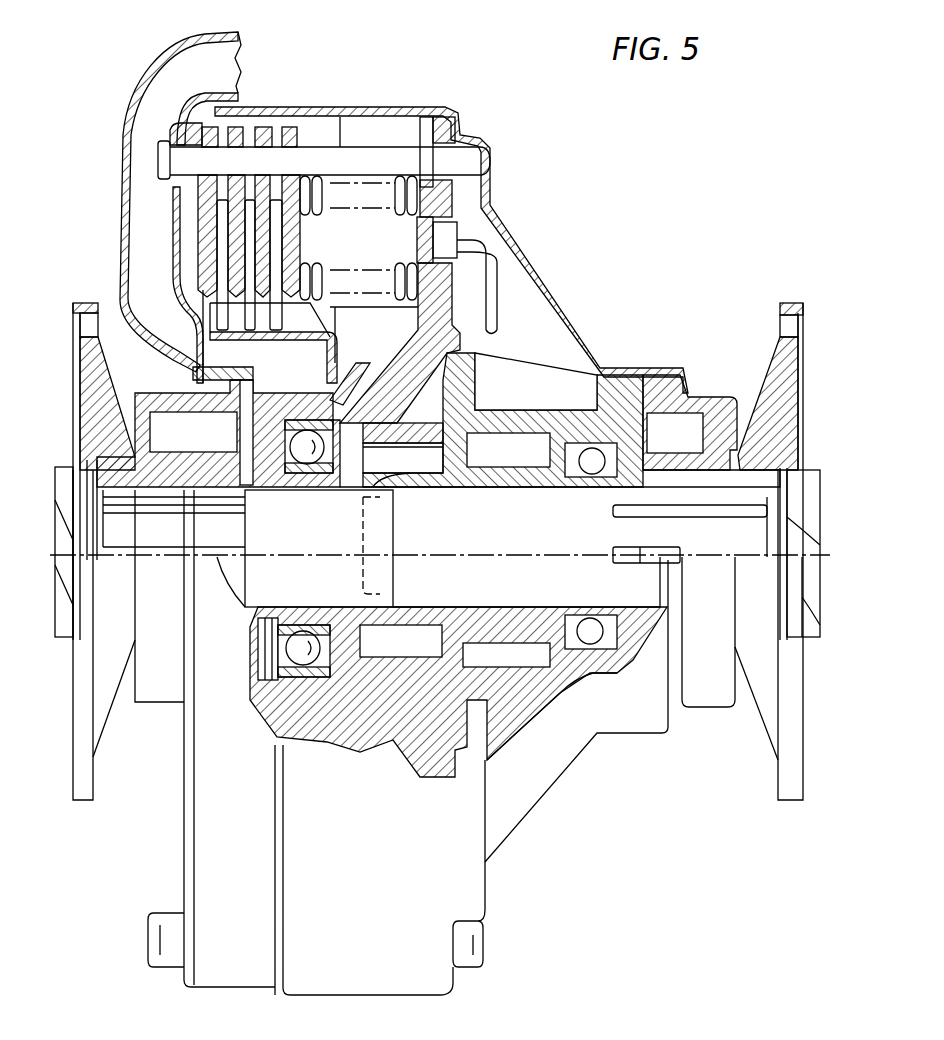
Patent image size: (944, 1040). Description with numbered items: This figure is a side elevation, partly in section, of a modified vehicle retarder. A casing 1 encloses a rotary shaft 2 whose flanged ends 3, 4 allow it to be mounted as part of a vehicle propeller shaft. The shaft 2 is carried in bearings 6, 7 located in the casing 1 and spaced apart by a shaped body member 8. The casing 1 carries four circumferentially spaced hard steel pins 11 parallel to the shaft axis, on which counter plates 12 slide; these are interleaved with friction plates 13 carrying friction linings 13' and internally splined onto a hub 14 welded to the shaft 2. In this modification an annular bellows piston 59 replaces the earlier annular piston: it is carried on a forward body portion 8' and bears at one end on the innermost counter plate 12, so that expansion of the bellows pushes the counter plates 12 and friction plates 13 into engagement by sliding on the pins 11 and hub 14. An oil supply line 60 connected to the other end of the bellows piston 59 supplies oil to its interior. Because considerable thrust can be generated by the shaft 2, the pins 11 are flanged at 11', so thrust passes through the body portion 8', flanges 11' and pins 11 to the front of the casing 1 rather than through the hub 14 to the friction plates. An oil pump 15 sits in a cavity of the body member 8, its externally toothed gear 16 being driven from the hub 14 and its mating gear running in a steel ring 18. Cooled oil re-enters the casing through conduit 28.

The casing 1 is at (435, 742).
The shaft 2 is at (437, 550).
The flanged end 3 is at (100, 372).
The flanged end 4 is at (813, 412).
The bearing 6 is at (307, 450).
The bearing 7 is at (590, 474).
The body member 8 is at (606, 411).
The forward body portion 8' is at (438, 297).
The pins 11 is at (324, 160).
The flanges 11' is at (432, 167).
The counter plates 12 is at (290, 128).
The friction plates 13 is at (274, 252).
The friction linings 13' is at (175, 279).
The hub 14 is at (287, 337).
The oil pump 15 is at (413, 458).
The externally toothed gear 16 is at (432, 482).
The steel ring 18 is at (390, 428).
The conduit 28 is at (176, 45).
The bellows piston 59 is at (358, 238).
The oil supply line 60 is at (498, 310).